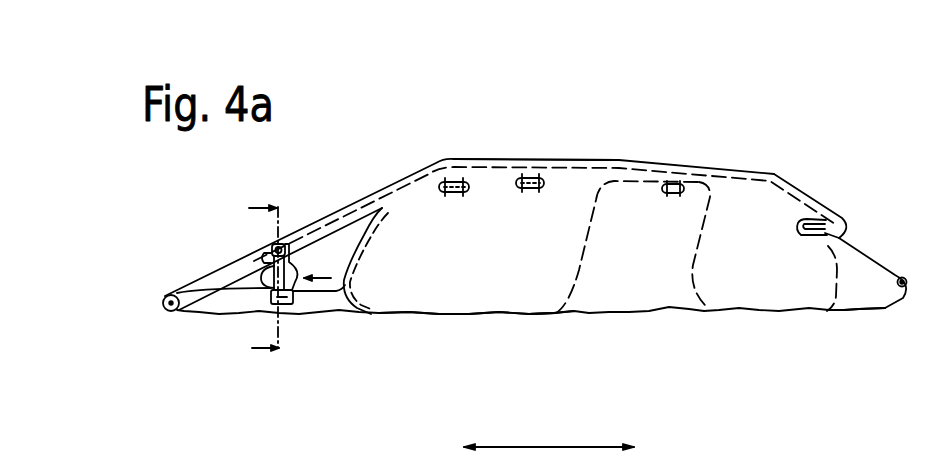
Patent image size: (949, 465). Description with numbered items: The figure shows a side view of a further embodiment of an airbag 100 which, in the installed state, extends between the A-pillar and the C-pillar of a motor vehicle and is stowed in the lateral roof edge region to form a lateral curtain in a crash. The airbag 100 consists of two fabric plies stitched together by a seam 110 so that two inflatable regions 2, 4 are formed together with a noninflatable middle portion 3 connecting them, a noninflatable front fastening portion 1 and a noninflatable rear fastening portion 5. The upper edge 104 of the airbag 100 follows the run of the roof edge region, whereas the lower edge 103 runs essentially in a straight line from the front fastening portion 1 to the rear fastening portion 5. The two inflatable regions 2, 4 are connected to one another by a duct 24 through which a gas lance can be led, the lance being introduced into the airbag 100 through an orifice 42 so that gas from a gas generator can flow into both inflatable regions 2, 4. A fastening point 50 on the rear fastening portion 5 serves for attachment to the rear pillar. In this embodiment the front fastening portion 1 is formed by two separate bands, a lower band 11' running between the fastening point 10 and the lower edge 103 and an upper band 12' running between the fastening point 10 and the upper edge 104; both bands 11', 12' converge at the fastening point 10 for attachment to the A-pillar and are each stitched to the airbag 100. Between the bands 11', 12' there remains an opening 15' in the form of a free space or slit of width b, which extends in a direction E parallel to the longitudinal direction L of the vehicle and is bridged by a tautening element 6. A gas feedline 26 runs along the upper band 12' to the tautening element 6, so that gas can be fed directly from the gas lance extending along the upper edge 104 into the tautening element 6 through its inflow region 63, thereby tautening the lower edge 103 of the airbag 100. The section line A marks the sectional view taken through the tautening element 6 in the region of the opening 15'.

The fastening point 10 is at (164, 294).
The front fastening portion 1 is at (250, 317).
The upper band 12' is at (501, 213).
The gas feedline 26 is at (373, 197).
The upper edge 104 is at (558, 160).
The seam 110 is at (725, 172).
The orifice 42 is at (838, 223).
The fastening point 50 is at (905, 276).
The airbag 100 is at (508, 263).
The duct 24 is at (637, 176).
The middle portion 3 is at (647, 300).
The rear inflatable region 4 is at (765, 296).
The rear fastening portion 5 is at (863, 298).
The front inflatable region 2 is at (458, 301).
The lower edge 103 is at (545, 313).
The tautening element 6 is at (284, 305).
The lower band 11' is at (319, 338).
The inflow region 63 is at (281, 246).
The width b is at (302, 255).
The opening 15' is at (238, 241).
The section line A- A is at (263, 277).
The direction E is at (317, 257).
The longitudinal direction L is at (549, 428).